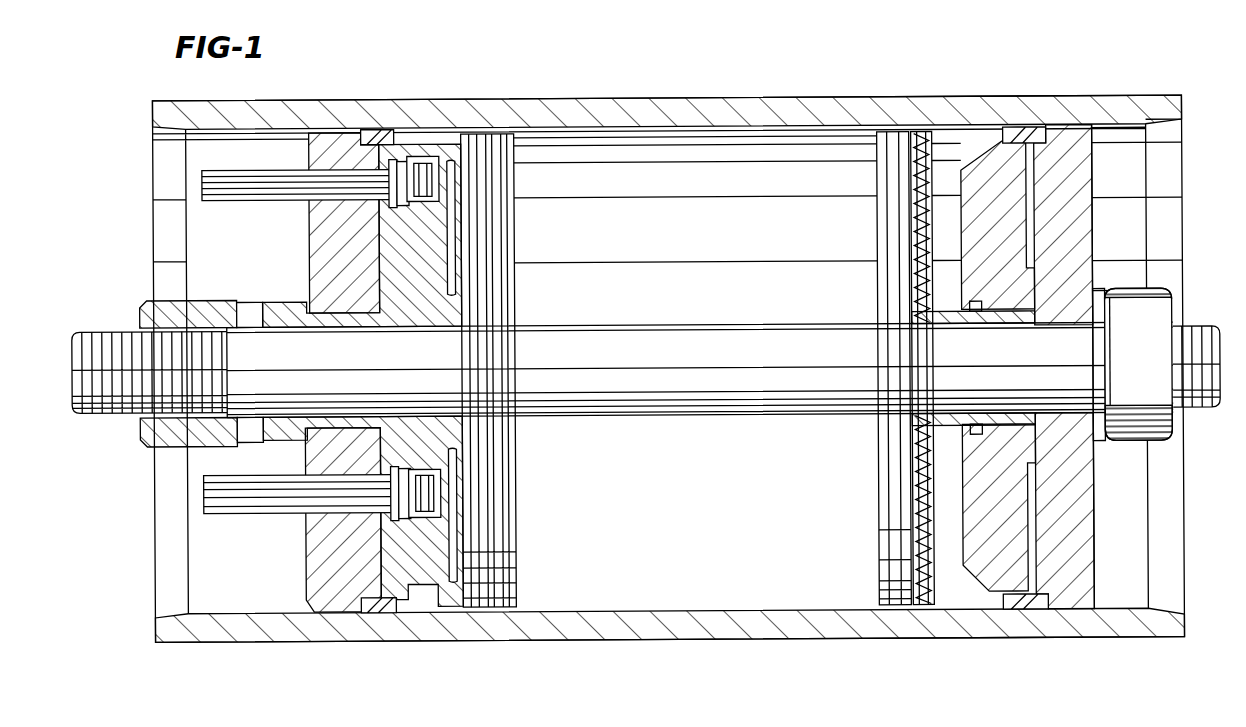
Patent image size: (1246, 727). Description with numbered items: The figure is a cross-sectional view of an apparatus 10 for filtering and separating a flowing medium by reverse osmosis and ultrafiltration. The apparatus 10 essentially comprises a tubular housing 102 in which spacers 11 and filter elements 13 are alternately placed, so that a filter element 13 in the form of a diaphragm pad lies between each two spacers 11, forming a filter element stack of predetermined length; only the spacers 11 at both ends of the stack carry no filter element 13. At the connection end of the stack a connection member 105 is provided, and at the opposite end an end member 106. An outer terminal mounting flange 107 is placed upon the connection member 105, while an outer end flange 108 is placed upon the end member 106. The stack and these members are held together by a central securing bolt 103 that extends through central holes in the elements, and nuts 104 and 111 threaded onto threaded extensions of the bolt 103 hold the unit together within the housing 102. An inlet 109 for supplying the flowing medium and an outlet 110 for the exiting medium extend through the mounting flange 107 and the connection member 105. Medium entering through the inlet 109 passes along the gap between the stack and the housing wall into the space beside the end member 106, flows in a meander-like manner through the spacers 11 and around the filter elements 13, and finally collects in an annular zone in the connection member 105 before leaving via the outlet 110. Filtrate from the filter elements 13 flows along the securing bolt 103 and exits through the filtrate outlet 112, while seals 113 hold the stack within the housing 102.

The apparatus 10 is at (699, 88).
The tubular housing 102 is at (773, 98).
The central securing bolt 103 is at (1198, 329).
The nut 104 is at (1156, 364).
The connection member 105 is at (455, 143).
The end member 106 is at (980, 150).
The outer terminal mounting flange 107 is at (333, 131).
The outer end flange 108 is at (1075, 140).
The inlet 109 is at (233, 168).
The outlet 110 is at (203, 500).
The nut 111 is at (150, 300).
The filtrate outlet 112 is at (248, 300).
The seals 113 is at (378, 128).
The spacer 11 is at (470, 606).
The filter element 13 is at (918, 442).